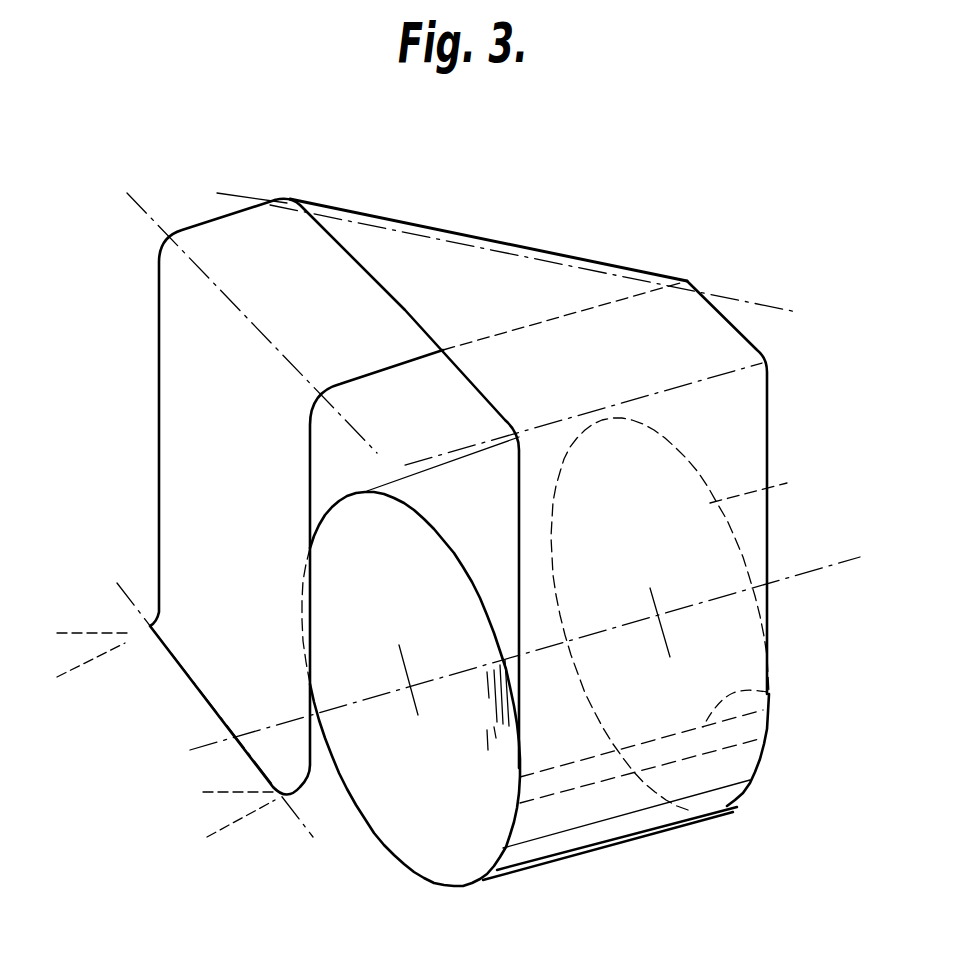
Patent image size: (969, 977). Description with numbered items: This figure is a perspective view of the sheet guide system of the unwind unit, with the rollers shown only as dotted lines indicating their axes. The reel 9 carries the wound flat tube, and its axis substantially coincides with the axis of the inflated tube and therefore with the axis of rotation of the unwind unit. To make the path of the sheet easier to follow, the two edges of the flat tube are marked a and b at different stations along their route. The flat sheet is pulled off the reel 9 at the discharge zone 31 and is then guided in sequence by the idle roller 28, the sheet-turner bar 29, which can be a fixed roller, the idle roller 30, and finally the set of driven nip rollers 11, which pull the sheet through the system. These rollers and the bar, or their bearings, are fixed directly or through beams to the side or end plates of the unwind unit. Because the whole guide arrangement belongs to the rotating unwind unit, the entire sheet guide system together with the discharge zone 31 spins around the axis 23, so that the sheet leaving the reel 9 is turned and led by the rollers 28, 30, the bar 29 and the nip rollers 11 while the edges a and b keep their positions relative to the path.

The reel 9 is at (437, 853).
The driven nip rollers 11 is at (117, 583).
The axis 23 is at (843, 560).
The idle roller 28 is at (757, 367).
The sheet-turner bar 29 is at (767, 302).
The idle roller 30 is at (148, 215).
The discharge zone 31 is at (767, 692).
The edge of flat tube a is at (233, 212).
The edge of flat tube b is at (567, 313).